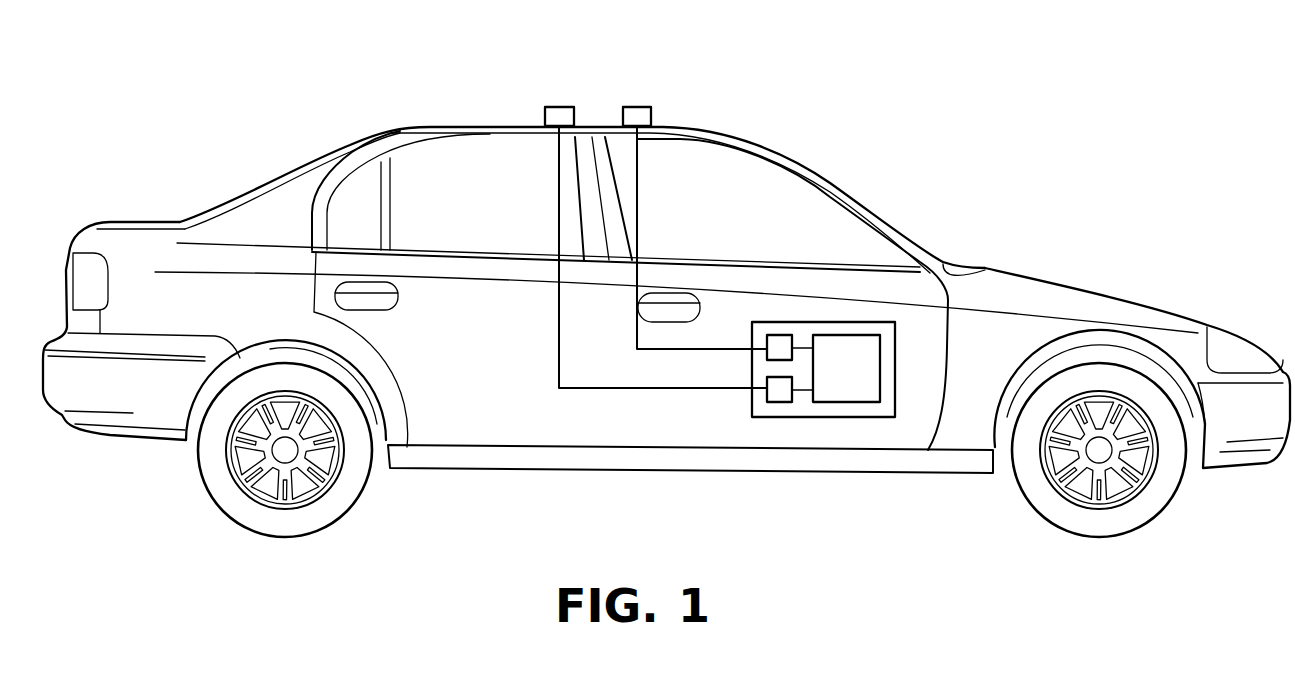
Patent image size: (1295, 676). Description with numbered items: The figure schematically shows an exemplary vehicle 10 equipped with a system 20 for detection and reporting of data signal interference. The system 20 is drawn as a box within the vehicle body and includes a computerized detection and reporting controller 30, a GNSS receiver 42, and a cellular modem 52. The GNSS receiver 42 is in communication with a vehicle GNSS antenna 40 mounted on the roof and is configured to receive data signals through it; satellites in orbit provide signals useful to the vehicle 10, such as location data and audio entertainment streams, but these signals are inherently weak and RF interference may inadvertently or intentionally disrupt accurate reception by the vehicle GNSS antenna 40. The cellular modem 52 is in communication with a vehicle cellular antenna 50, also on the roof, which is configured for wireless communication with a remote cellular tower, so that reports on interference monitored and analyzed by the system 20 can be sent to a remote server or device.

The vehicle 10 is at (505, 126).
The system for detection and reporting of data signal interference 20 is at (895, 350).
The computerized detection and reporting controller 30 is at (842, 334).
The vehicle GNSS antenna 40 is at (637, 106).
The GNSS receiver 42 is at (772, 334).
The vehicle cellular antenna 50 is at (557, 106).
The cellular modem 52 is at (777, 403).